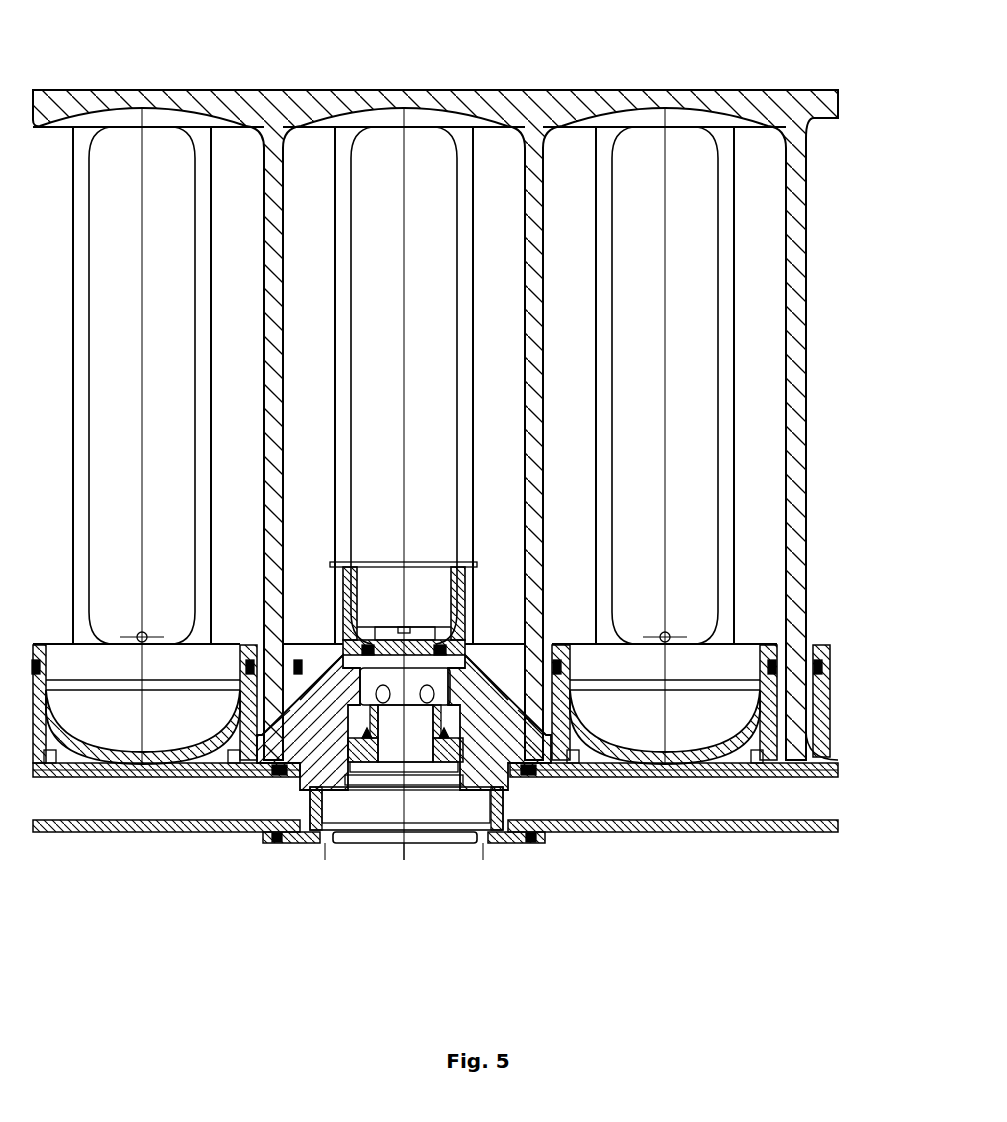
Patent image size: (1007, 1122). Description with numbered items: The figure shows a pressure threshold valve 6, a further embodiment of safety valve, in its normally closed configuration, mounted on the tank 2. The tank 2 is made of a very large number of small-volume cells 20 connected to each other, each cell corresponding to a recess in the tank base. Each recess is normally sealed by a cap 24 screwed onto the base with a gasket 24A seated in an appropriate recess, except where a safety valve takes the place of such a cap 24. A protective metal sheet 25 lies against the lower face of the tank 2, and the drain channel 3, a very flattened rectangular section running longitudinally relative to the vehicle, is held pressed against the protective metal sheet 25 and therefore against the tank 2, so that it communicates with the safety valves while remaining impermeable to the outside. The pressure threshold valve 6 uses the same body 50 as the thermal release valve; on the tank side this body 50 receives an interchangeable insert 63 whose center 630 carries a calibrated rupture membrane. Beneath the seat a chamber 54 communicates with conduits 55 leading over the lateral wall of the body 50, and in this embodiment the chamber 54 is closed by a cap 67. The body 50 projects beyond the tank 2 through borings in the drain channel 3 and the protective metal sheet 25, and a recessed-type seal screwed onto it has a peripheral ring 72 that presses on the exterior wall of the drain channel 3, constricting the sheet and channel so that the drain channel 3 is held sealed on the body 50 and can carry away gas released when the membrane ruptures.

The tank 2 is at (178, 60).
The cells 20 is at (425, 165).
The body 50 is at (254, 666).
The conduits 55 is at (322, 735).
The insert 63 is at (363, 647).
The center of the insert 630 is at (420, 647).
The chamber 54 is at (398, 692).
The cap 67 is at (312, 843).
The peripheral ring 72 is at (285, 843).
The drain channel 3 is at (152, 828).
The pressure threshold valve 6 is at (433, 873).
The cap 24 is at (687, 767).
The gasket 24A is at (587, 753).
The protective metal sheet 25 is at (758, 770).